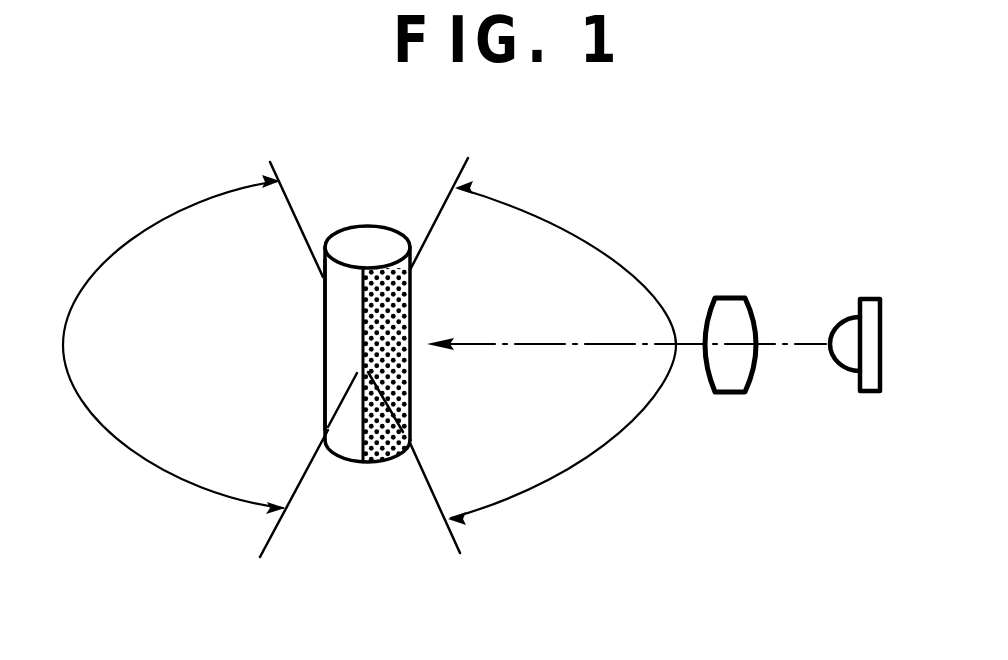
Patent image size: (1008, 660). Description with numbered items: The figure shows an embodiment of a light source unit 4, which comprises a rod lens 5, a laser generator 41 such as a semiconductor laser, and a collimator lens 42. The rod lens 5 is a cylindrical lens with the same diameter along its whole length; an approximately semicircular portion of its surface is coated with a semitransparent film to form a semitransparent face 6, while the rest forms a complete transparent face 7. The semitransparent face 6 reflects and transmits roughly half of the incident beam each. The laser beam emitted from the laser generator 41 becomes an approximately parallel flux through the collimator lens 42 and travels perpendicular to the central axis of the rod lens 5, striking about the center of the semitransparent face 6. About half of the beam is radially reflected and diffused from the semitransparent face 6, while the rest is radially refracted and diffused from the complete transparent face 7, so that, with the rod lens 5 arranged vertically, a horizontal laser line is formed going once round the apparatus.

The light source unit 4 is at (807, 331).
The laser generator 41 is at (875, 358).
The collimator lens 42 is at (730, 380).
The rod lens 5 is at (366, 204).
The semitransparent face 6 is at (393, 313).
The complete transparent face 7 is at (335, 353).